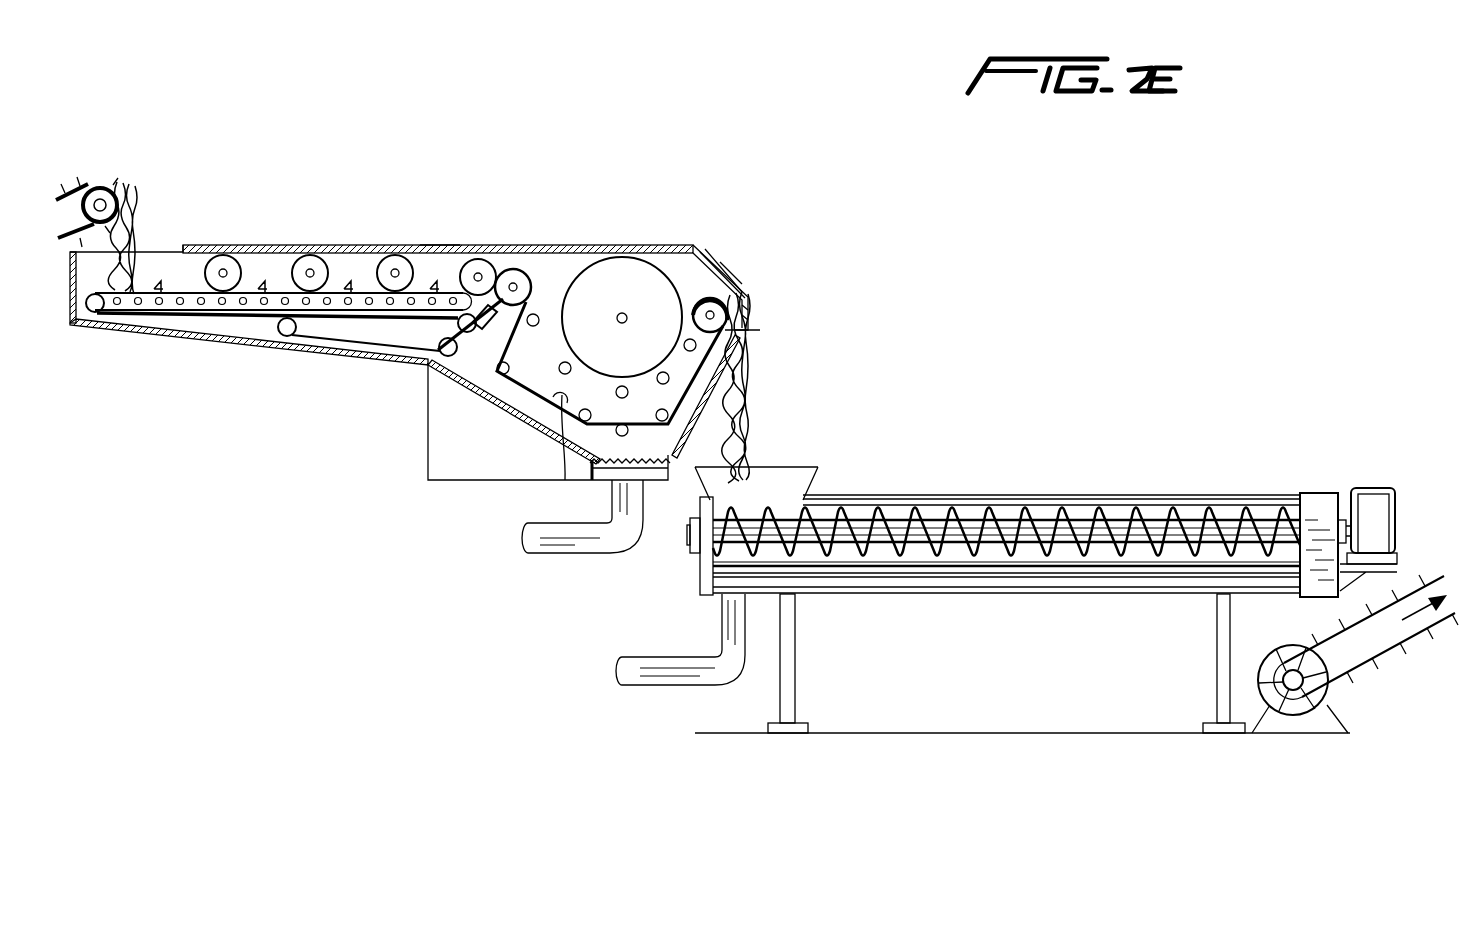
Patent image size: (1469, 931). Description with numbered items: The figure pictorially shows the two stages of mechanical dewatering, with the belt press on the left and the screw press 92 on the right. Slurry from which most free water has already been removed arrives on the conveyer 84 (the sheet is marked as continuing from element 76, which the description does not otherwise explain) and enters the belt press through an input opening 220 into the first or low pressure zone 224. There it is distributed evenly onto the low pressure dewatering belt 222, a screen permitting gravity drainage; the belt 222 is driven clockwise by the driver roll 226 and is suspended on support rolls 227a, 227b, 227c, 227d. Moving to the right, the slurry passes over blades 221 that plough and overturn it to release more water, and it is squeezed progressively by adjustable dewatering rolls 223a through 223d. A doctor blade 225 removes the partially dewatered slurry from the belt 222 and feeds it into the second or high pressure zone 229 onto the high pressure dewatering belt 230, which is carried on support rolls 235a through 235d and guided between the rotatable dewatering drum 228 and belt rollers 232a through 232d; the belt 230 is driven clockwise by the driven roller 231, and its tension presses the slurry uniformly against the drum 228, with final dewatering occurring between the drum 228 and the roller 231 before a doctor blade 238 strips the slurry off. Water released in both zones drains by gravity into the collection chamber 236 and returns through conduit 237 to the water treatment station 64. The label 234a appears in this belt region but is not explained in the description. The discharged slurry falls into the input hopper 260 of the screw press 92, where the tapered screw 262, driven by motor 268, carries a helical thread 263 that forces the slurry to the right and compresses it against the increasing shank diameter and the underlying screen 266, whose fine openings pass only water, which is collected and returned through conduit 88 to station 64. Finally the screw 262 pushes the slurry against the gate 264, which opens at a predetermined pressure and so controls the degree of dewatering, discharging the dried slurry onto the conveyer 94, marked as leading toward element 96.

The conveyor belt from FIG. 2D 76 is at (127, 171).
The conveyer 84 is at (80, 182).
The input opening 220 is at (175, 248).
The blades 221 is at (258, 290).
The low pressure dewatering belt 222 is at (334, 316).
The dewatering roll 223a is at (223, 262).
The dewatering roll 223d is at (455, 262).
The first or low pressure zone 224 is at (238, 323).
The doctor blade 225 is at (550, 330).
The driver roll 226 is at (514, 268).
The support roll 227a is at (95, 313).
The support roll 227b is at (440, 350).
The support roll 227c is at (460, 335).
The support roll 227d is at (283, 338).
The dewatering drum 228 is at (620, 275).
The second or high pressure zone 229 is at (700, 279).
The high pressure dewatering belt 230 is at (562, 478).
The driven roller 231 is at (722, 300).
The belt roller 232a is at (729, 376).
The belt roller 232d is at (520, 417).
The scraper 234a is at (478, 326).
The support roll 235a is at (577, 335).
The support roll 235d is at (737, 428).
The collection chamber 236 is at (548, 372).
The conduit 237 is at (563, 554).
The doctor blade 238 is at (741, 343).
The input hopper 260 is at (818, 477).
The screw press 92 is at (990, 496).
The tapered screw 262 is at (1118, 517).
The helical thread 263 is at (937, 567).
The gate 264 is at (1318, 505).
The screen 266 is at (830, 567).
The motor 268 is at (1372, 500).
The conduit 88 is at (660, 668).
The conveyer 94 is at (1362, 664).
The destination in FIG. 2F 96 is at (1419, 692).
The water treatment station 64 is at (510, 537).